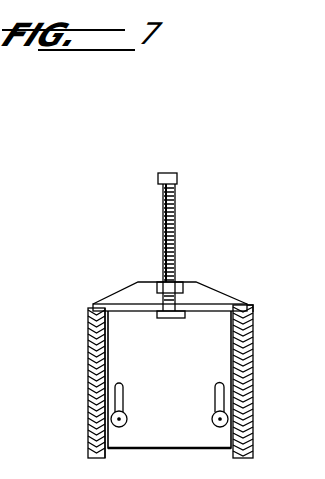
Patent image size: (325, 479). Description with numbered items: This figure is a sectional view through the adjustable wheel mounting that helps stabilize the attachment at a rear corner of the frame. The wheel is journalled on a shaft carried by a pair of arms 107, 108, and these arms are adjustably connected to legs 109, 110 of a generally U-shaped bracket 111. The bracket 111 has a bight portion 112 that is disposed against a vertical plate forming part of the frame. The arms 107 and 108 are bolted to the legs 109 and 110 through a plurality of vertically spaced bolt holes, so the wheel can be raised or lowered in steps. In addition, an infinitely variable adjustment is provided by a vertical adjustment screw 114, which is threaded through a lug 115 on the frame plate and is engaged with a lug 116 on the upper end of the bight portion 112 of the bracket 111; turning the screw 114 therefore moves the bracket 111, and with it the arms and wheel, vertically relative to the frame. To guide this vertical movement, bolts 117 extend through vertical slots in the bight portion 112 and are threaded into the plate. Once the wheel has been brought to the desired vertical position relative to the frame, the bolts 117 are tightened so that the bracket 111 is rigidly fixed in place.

The arm 107 is at (100, 366).
The arm 108 is at (248, 353).
The leg 109 is at (94, 339).
The leg 110 is at (248, 320).
The U-shaped bracket 111 is at (234, 290).
The bight portion 112 is at (192, 308).
The vertical adjustment screw 114 is at (177, 216).
The lug 115 is at (158, 287).
The lug 116 is at (162, 310).
The bolts 117 is at (214, 426).